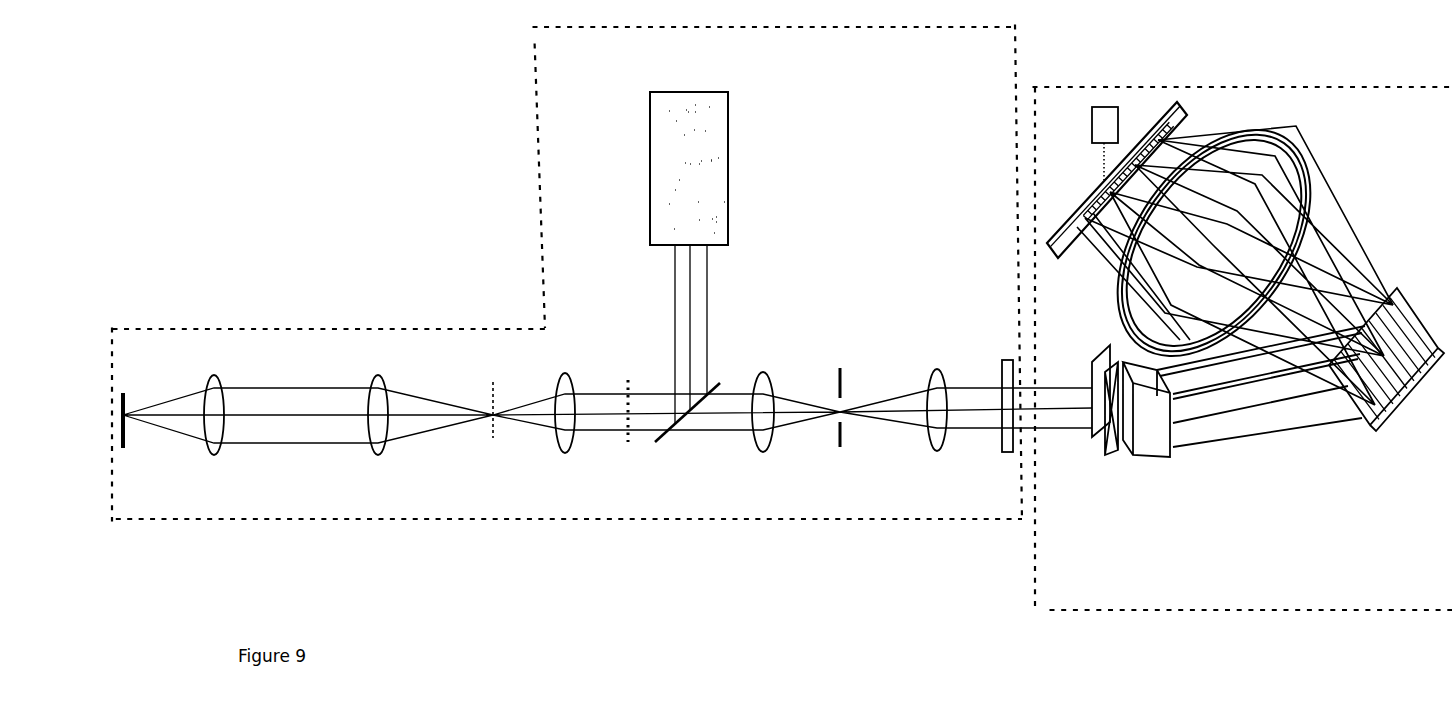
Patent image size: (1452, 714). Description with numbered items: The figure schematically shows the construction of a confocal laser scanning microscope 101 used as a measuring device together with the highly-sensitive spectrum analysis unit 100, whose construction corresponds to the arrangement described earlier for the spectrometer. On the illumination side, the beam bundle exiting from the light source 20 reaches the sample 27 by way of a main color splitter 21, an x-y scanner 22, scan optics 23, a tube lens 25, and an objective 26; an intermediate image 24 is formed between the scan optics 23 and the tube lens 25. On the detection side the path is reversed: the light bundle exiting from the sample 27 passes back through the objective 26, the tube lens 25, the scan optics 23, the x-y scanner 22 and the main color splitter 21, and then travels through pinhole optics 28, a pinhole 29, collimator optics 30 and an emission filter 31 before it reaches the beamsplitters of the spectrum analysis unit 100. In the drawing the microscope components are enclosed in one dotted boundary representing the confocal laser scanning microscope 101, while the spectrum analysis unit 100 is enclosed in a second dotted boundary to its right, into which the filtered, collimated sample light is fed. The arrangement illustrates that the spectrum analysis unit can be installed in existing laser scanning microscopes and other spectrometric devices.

The light source 20 is at (708, 258).
The main color splitter 21 is at (687, 421).
The x-y scanner 22 is at (628, 424).
The scan optics 23 is at (565, 402).
The intermediate image 24 is at (498, 425).
The tube lens 25 is at (369, 429).
The objective 26 is at (203, 395).
The sample 27 is at (133, 438).
The pinhole optics 28 is at (764, 396).
The pinhole 29 is at (837, 420).
The collimator optics 30 is at (938, 396).
The emission filter 31 is at (999, 393).
The spectrum analysis unit 100 is at (1243, 349).
The confocal laser scanning microscope 101 is at (567, 273).